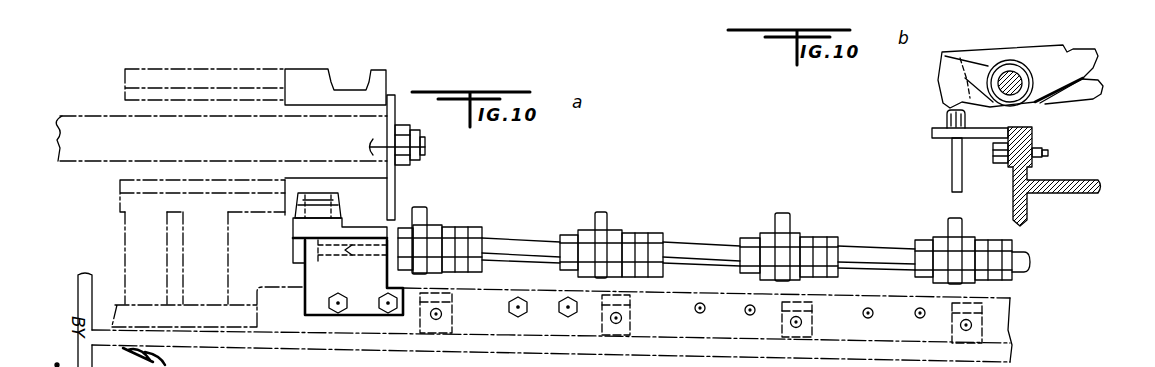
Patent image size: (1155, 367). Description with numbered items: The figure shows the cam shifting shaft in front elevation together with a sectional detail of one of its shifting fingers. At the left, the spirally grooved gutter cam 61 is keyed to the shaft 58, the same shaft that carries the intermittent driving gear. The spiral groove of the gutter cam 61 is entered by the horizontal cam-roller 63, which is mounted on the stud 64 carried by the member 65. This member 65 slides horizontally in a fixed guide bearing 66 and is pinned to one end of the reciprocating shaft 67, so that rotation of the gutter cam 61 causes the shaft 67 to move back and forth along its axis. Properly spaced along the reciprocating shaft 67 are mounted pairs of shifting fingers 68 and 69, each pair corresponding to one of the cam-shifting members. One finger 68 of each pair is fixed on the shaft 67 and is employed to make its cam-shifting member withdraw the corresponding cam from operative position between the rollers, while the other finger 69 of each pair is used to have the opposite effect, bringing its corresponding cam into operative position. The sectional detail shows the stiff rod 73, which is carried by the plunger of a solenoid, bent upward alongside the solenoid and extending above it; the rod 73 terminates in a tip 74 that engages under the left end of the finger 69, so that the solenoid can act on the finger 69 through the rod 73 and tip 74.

In FIG. 10A, the shaft 58 is at (425, 147).
In FIG. 10A, the spirally grooved gutter cam 61 is at (305, 70).
In FIG. 10A, the horizontal cam-roller 63 is at (343, 210).
In FIG. 10A, the stud 64 is at (345, 205).
In FIG. 10A, the member 65 is at (292, 240).
In FIG. 10A, the fixed guide bearing 66 is at (354, 277).
In FIG. 10A, the reciprocating shaft 67 is at (513, 243).
In FIG. 10B, the reciprocating shaft 67 is at (1010, 80).
In FIG. 10A, the shifting finger 68 is at (456, 250).
In FIG. 10B, the shifting finger 68 is at (1096, 83).
In FIG. 10A, the shifting finger 69 is at (428, 215).
In FIG. 10B, the shifting finger 69 is at (1066, 52).
In FIG. 10B, the stiff rod 73 is at (951, 159).
In FIG. 10B, the tip 74 is at (946, 120).